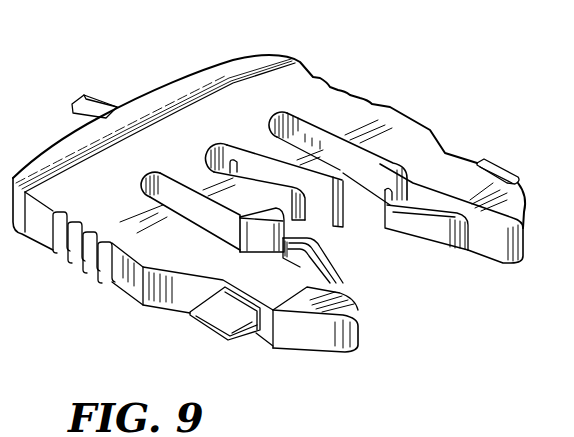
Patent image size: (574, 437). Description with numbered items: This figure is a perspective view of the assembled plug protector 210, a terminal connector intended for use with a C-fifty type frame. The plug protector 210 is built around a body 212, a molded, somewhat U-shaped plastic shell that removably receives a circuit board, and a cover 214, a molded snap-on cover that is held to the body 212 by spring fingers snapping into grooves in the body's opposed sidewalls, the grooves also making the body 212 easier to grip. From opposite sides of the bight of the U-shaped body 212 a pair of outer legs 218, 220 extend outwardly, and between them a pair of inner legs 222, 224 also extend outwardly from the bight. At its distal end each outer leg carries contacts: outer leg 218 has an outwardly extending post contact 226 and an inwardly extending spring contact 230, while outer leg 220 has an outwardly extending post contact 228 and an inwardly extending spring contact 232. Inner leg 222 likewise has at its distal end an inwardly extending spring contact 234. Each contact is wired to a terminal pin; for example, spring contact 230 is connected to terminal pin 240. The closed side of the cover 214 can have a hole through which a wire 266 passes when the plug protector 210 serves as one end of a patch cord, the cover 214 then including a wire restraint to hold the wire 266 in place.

The plug protector 210 is at (148, 313).
The body 212 is at (410, 115).
The cover 214 is at (267, 58).
The outer leg 218 is at (520, 264).
The outer leg 220 is at (362, 341).
The inner leg 222 is at (303, 203).
The inner leg 224 is at (268, 220).
The post contact 226 is at (503, 173).
The post contact 228 is at (214, 333).
The spring contact 230 is at (445, 235).
The spring contact 232 is at (343, 281).
The spring contact 234 is at (280, 185).
The wire 266 is at (100, 105).
The terminal pin 240 is at (554, 428).